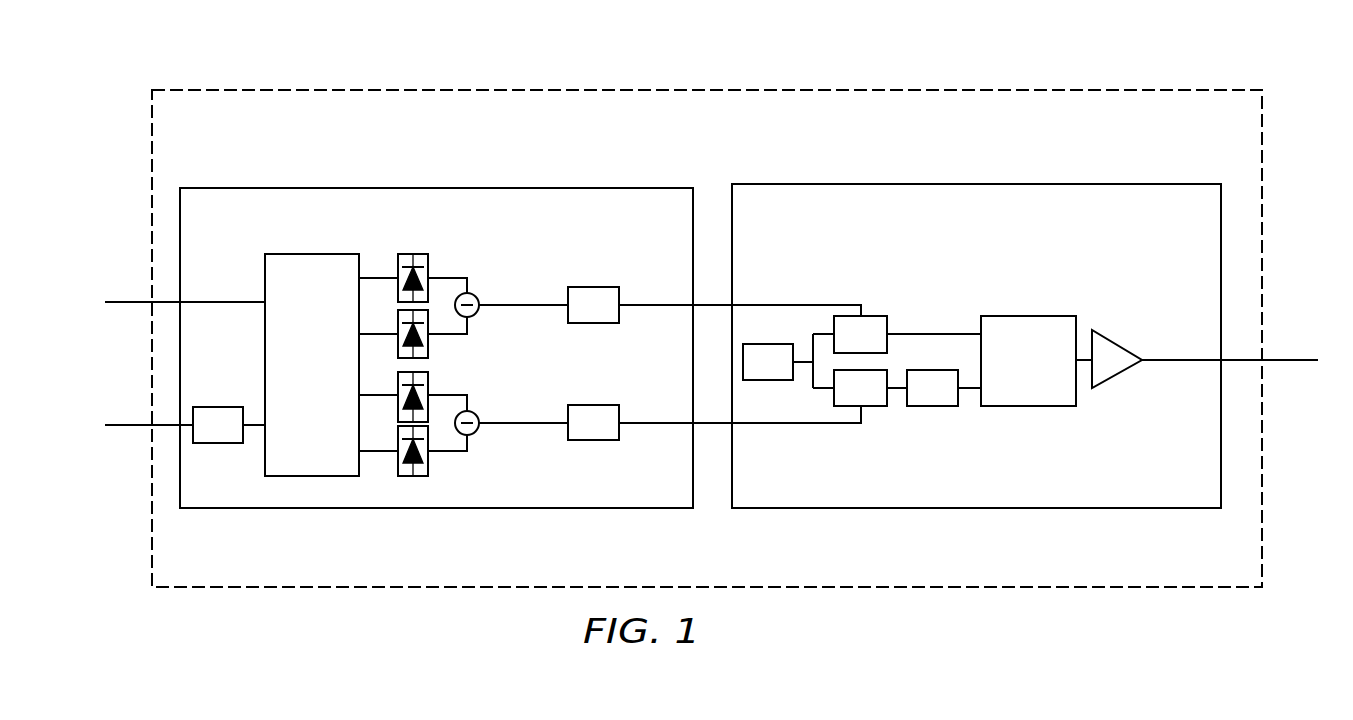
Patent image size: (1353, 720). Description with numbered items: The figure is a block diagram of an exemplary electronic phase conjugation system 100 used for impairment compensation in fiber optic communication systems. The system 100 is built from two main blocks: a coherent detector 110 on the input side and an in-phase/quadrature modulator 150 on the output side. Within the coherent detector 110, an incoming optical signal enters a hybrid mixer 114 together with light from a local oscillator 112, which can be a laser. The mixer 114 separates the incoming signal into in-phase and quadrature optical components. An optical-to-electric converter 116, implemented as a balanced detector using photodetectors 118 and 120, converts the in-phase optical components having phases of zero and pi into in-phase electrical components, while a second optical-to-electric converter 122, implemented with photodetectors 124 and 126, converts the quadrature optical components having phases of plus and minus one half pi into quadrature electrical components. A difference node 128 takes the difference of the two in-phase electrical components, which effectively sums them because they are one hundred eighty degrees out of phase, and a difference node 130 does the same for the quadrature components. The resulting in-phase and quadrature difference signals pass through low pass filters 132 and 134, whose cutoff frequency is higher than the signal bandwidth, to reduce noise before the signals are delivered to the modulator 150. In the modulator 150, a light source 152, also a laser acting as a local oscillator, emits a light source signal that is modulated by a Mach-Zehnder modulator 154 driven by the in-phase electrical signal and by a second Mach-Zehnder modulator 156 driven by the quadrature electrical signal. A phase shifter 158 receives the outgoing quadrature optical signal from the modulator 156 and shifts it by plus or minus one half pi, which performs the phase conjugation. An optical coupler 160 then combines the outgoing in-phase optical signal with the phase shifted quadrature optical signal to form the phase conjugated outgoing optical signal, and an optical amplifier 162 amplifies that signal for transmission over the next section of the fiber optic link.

The electronic phase conjugation system 100 is at (732, 90).
The coherent detector 110 is at (472, 188).
The local oscillator 112 is at (214, 444).
The hybrid mixer 114 is at (263, 366).
The optical-to-electric converter 116 is at (418, 279).
The photodetector 118 is at (430, 262).
The photodetector 120 is at (430, 353).
The optical-to-electric converter 122 is at (444, 467).
The photodetector 124 is at (430, 380).
The photodetector 126 is at (430, 474).
The difference node 128 is at (477, 297).
The difference node 130 is at (477, 415).
The low pass filter 132 is at (619, 296).
The low pass filter 134 is at (592, 441).
The I/Q modulator 150 is at (1102, 184).
The light source 152 is at (767, 381).
The Mach-Zehnder modulator 154 is at (886, 316).
The Mach-Zehnder modulator 156 is at (873, 407).
The phase shifter 158 is at (934, 407).
The optical coupler 160 is at (1003, 407).
The optical amplifier 162 is at (1103, 383).